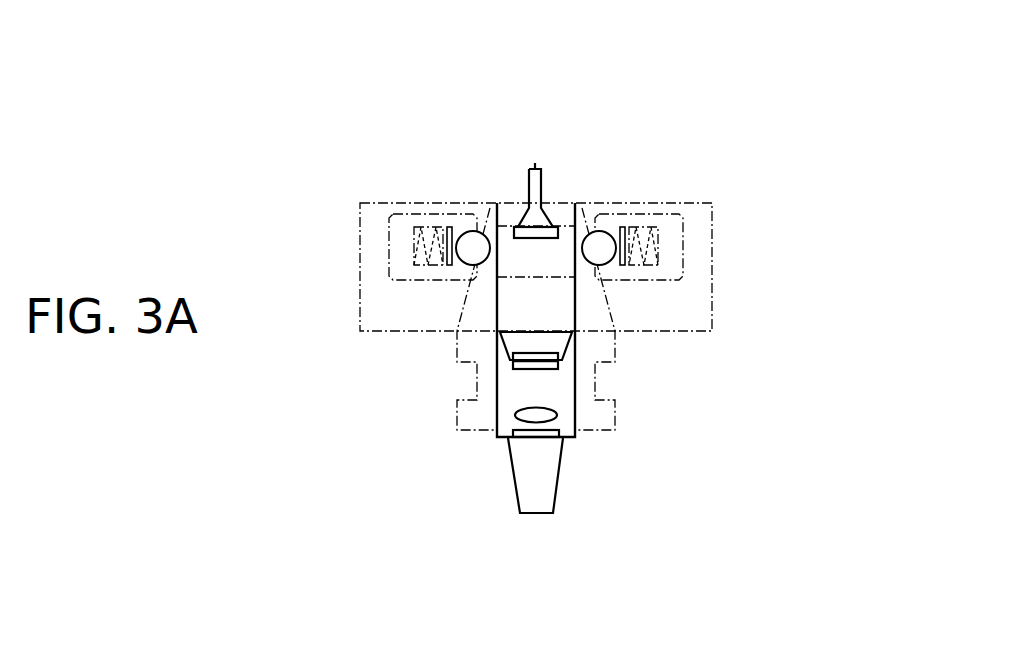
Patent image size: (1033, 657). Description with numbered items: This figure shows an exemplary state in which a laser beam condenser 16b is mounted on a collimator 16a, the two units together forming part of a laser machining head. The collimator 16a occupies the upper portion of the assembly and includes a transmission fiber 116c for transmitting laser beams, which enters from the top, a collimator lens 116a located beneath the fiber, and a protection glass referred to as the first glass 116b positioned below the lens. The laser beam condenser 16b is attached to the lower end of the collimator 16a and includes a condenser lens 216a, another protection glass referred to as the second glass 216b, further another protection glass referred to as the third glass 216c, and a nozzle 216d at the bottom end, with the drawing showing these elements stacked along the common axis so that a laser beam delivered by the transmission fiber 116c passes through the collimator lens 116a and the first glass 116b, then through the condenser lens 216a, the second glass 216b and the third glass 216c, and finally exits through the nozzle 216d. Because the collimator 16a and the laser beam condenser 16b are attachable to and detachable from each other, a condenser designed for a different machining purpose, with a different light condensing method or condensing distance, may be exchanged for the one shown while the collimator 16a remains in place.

The collimator 16a is at (547, 310).
The laser beam condenser 16b is at (563, 403).
The collimator lens 116a is at (545, 232).
The protection glass (first glass) 116b is at (540, 348).
The transmission fiber 116c is at (533, 185).
The condenser lens 216a is at (520, 416).
The protection glass (second glass) 216b is at (547, 370).
The protection glass (third glass) 216c is at (538, 440).
The nozzle 216d is at (538, 474).